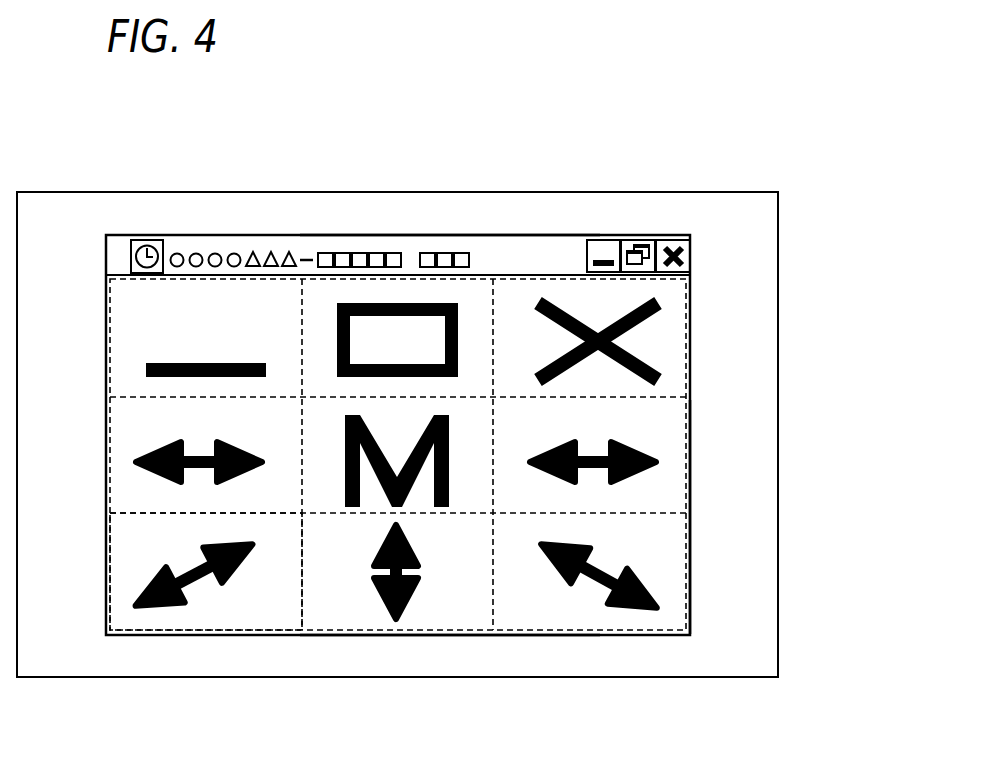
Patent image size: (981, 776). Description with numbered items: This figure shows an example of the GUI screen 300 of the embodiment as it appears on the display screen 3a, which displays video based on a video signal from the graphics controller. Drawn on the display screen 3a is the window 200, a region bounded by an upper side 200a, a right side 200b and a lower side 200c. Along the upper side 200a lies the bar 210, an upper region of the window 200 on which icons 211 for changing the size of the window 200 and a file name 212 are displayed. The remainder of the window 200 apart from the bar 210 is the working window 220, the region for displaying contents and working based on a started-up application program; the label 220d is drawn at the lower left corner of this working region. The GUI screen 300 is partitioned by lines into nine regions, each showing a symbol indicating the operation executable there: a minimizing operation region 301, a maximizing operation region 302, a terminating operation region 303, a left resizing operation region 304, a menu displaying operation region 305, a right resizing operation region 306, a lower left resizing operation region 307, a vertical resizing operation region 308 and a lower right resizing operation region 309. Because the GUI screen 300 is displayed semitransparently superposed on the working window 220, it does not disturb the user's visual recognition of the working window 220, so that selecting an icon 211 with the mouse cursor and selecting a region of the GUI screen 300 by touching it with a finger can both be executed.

The display screen 3a is at (403, 192).
The window 200 is at (386, 649).
The upper side 200a is at (480, 234).
The right side 200b is at (690, 513).
The lower side 200c is at (450, 615).
The bar 210 is at (121, 247).
The icons 211 is at (605, 236).
The file name 212 is at (192, 252).
The working window 220 is at (108, 470).
The grid cell 220d is at (110, 517).
The GUI screen 300 is at (692, 293).
The minimizing operation region 301 is at (122, 345).
The maximizing operation region 302 is at (378, 295).
The terminating operation region 303 is at (672, 365).
The left resizing operation region 304 is at (122, 430).
The menu displaying operation region 305 is at (325, 430).
The right resizing operation region 306 is at (672, 445).
The lower left resizing operation region 307 is at (122, 598).
The vertical resizing operation region 308 is at (323, 615).
The lower right resizing operation region 309 is at (662, 617).